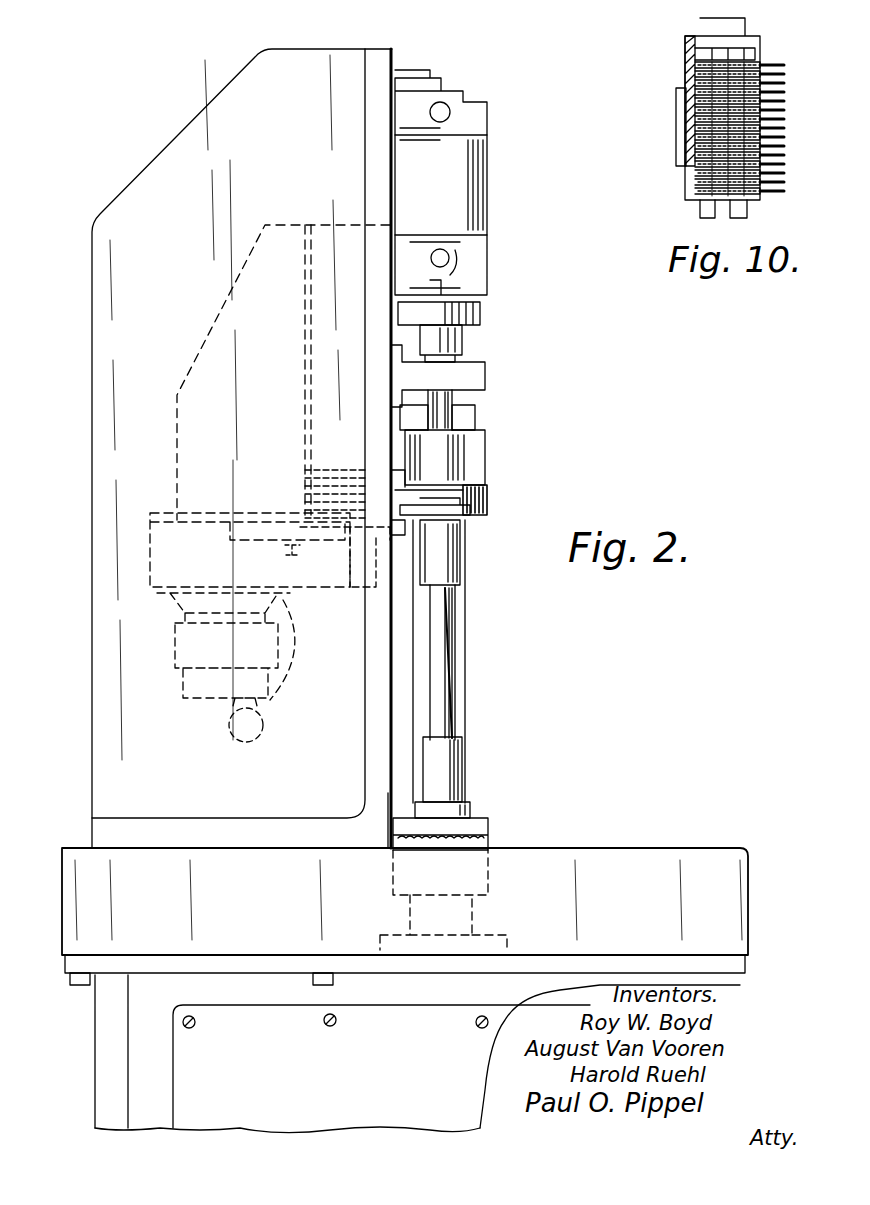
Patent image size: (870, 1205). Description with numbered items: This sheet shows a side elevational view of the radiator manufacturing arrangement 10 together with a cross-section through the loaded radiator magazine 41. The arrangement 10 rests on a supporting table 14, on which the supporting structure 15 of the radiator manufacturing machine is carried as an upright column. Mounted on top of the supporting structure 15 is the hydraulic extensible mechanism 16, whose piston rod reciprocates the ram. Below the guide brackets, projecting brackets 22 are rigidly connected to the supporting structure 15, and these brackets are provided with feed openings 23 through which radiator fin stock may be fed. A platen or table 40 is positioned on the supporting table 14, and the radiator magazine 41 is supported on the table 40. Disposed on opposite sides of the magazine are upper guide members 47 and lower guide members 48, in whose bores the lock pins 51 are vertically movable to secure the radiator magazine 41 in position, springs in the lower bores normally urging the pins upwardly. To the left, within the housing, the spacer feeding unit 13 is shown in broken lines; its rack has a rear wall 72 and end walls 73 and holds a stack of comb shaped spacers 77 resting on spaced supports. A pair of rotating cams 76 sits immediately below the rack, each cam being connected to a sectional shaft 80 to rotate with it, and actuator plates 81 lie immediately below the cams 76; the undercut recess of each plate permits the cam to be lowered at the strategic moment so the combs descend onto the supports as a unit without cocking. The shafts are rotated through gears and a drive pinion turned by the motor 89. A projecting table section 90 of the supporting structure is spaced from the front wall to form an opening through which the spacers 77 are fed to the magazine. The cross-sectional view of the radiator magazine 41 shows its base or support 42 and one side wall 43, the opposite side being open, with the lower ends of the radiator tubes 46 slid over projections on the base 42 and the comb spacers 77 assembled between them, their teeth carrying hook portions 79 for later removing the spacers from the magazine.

In FIG. 2, the radiator manufacturing arrangement 10 is at (150, 99).
In FIG. 2, the spacer feeding unit 13 is at (232, 290).
In FIG. 2, the supporting table 14 is at (676, 850).
In FIG. 2, the supporting structure 15 is at (379, 55).
In FIG. 2, the hydraulic extensible mechanism 16 is at (487, 160).
In FIG. 2, the projecting brackets 22 is at (487, 495).
In FIG. 2, the feed openings 23 is at (455, 507).
In FIG. 2, the platen or table 40 is at (490, 840).
In FIG. 2, the radiator magazine 41 is at (475, 748).
In FIG. 10, the radiator magazine 41 is at (681, 53).
In FIG. 2, the base or support 42 is at (490, 824).
In FIG. 10, the side wall 43 is at (676, 140).
In FIG. 10, the radiator tubes 46 is at (705, 214).
In FIG. 2, the upper guide members 47 is at (455, 568).
In FIG. 2, the lower guide members 48 is at (462, 780).
In FIG. 2, the lock pins 51 is at (455, 657).
In FIG. 2, the rear wall 72 is at (304, 385).
In FIG. 2, the end walls 73 is at (118, 300).
In FIG. 2, the rotating cams 76 is at (350, 587).
In FIG. 2, the comb shaped spacers 77 is at (325, 478).
In FIG. 10, the comb shaped spacers 77 is at (762, 66).
In FIG. 10, the hook portions 79 is at (782, 170).
In FIG. 2, the sectional shaft 80 is at (303, 548).
In FIG. 2, the actuator plates 81 is at (262, 535).
In FIG. 2, the motor 89 is at (186, 688).
In FIG. 2, the projecting table section 90 is at (400, 540).